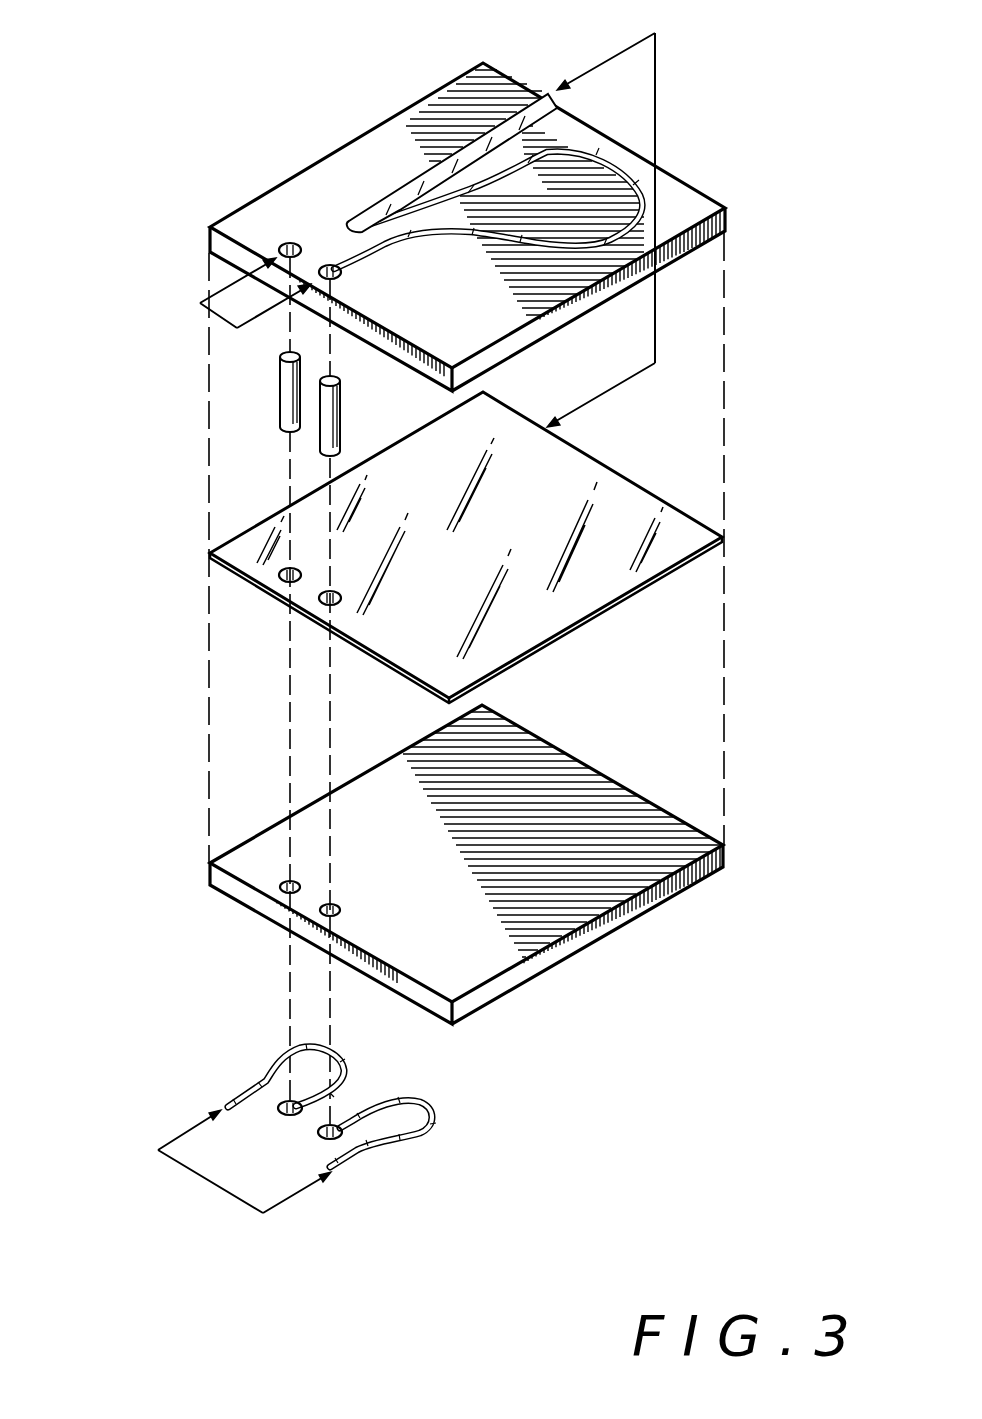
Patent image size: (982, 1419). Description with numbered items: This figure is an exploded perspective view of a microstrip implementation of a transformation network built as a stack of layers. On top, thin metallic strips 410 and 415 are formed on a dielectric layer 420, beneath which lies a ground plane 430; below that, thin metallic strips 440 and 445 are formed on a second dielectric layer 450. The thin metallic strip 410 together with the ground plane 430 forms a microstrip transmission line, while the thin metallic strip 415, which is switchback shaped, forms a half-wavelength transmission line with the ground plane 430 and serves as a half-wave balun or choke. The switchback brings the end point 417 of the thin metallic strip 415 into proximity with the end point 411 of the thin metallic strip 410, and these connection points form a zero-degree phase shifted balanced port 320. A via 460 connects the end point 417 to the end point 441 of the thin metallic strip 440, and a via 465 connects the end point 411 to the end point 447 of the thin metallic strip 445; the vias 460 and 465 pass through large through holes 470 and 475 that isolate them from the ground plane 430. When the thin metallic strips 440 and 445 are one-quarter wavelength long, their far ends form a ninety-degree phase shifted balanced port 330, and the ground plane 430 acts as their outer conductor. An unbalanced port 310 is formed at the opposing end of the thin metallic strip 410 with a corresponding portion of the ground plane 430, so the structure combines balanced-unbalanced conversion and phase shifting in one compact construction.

The unbalanced port 310 is at (656, 97).
The balanced port 320 is at (213, 316).
The balanced port 330 is at (208, 1187).
The thin metallic strip 410 is at (517, 100).
The end point 411 is at (288, 244).
The thin metallic strip 415 is at (637, 200).
The end point 417 is at (328, 262).
The dielectric layer 420 is at (728, 211).
The ground plane 430 is at (708, 520).
The thin metallic strip 440 is at (433, 1113).
The end point 441 is at (335, 1123).
The thin metallic strip 445 is at (246, 1090).
The end point 447 is at (289, 1100).
The dielectric layer 450 is at (707, 833).
The via 460 is at (318, 446).
The via 465 is at (280, 383).
The through hole 470 is at (290, 597).
The through hole 475 is at (278, 573).